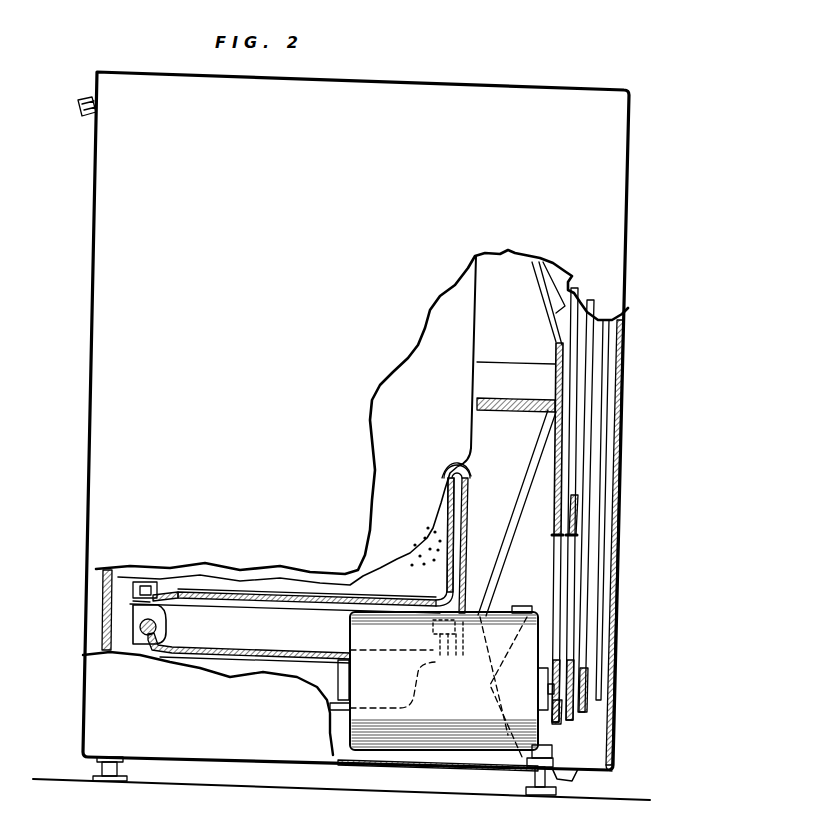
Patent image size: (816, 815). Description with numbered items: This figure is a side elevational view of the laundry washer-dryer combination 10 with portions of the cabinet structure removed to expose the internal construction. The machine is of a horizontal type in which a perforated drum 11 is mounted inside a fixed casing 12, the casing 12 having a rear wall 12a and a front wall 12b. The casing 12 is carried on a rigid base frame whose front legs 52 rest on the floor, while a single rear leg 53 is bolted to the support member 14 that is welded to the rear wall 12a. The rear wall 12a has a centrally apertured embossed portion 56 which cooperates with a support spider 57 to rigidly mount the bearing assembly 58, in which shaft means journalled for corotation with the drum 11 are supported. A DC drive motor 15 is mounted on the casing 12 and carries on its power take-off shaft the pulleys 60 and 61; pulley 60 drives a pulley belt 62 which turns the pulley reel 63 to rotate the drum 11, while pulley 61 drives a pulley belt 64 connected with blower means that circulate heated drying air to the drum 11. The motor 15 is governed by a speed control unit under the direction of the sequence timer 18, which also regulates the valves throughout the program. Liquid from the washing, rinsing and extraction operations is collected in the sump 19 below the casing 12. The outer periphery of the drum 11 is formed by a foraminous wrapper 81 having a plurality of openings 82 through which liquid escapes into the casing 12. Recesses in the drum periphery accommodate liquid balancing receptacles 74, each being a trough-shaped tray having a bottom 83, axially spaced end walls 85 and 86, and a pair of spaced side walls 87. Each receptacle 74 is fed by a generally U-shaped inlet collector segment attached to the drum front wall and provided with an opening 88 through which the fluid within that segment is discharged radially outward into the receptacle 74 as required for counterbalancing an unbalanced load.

The laundry washer-dryer combination 10 is at (547, 84).
The drum 11 is at (442, 594).
The casing 12 is at (478, 499).
The rear wall 12a is at (470, 534).
The front wall 12b is at (118, 613).
The support member 14 is at (516, 652).
The DC drive motor 15 is at (350, 743).
The sequence timer 18 is at (80, 98).
The sump 19 is at (405, 690).
The front legs 52 is at (108, 785).
The rear leg 53 is at (530, 800).
The embossed portion 56 is at (476, 480).
The support spider 57 is at (552, 325).
The bearing assembly 58 is at (529, 406).
The pulley 60 is at (558, 724).
The pulley 61 is at (584, 712).
The pulley belt 62 is at (568, 578).
The pulley reel 63 is at (562, 530).
The pulley belt 64 is at (597, 648).
The liquid balancing receptacle 74 is at (249, 659).
The foraminous wrapper 81 is at (392, 594).
The openings 82 is at (421, 553).
The bottom 83 is at (237, 672).
The end wall 85 is at (166, 628).
The end wall 86 is at (448, 655).
The side walls 87 is at (240, 634).
The opening 88 is at (148, 589).